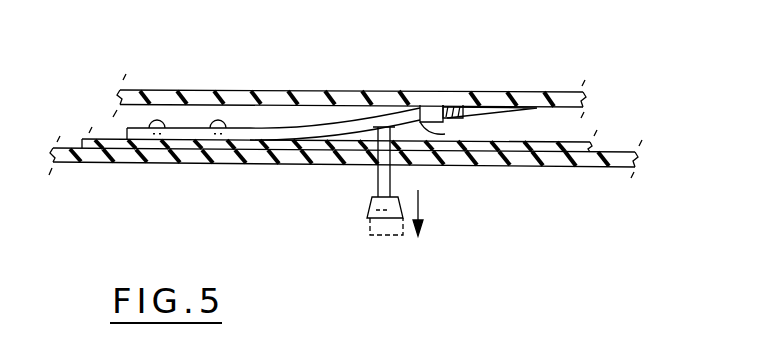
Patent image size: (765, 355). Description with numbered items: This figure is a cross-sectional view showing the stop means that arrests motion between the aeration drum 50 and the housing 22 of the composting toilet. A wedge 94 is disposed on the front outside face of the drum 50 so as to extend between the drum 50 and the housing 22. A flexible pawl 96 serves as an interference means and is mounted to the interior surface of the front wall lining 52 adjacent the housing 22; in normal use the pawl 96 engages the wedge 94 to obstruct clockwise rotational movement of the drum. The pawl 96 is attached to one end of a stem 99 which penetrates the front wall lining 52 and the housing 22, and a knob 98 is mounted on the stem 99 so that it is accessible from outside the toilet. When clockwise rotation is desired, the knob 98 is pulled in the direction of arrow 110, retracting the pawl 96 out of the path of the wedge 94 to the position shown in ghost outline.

The aeration drum 50 is at (198, 89).
The front wall lining 52 is at (560, 147).
The housing 22 is at (563, 168).
The flexible pawl 96 is at (448, 108).
The wedge 94 is at (470, 110).
The stem 99 is at (377, 182).
The knob 98 is at (368, 211).
The arrow 110 is at (420, 206).